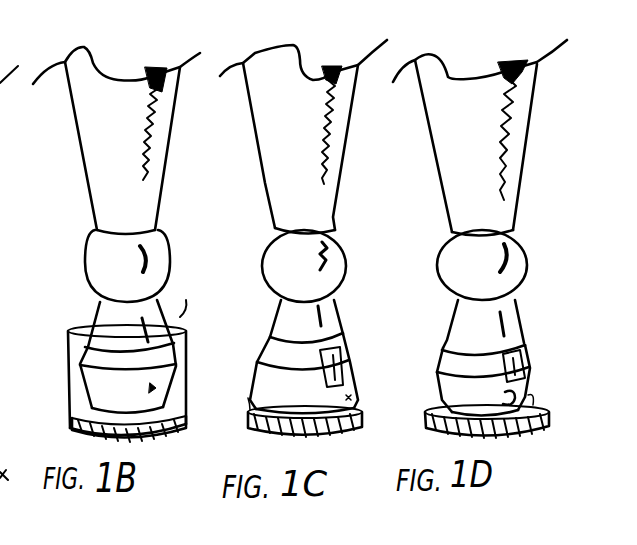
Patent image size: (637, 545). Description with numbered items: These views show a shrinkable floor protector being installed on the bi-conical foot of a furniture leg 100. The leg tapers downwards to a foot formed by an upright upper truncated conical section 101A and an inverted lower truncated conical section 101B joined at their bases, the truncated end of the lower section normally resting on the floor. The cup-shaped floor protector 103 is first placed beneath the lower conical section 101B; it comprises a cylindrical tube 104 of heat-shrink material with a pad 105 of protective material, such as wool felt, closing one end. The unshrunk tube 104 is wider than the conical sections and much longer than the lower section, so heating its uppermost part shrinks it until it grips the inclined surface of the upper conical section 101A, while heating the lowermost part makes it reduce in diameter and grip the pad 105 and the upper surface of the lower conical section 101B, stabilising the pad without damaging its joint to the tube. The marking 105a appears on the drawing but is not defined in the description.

In FIG. 1B, the furniture leg 100 is at (108, 137).
In FIG. 1D, the furniture leg 100 is at (455, 152).
In FIG. 1C, the horse leg 105a is at (297, 140).
In FIG. 1B, the upper truncated conical section 101A is at (115, 320).
In FIG. 1C, the upper truncated conical section 101A is at (290, 316).
In FIG. 1D, the upper truncated conical section 101A is at (456, 322).
In FIG. 1B, the lower truncated conical section 101B is at (103, 387).
In FIG. 1C, the lower truncated conical section 101B is at (283, 390).
In FIG. 1D, the lower truncated conical section 101B is at (470, 385).
In FIG. 1B, the floor protector 103 is at (191, 297).
In FIG. 1B, the cylindrical tube 104 is at (80, 353).
In FIG. 1C, the cylindrical tube 104 is at (243, 403).
In FIG. 1D, the cylindrical tube 104 is at (533, 405).
In FIG. 1B, the pad 105 is at (74, 426).
In FIG. 1C, the pad 105 is at (325, 430).
In FIG. 1D, the pad 105 is at (540, 422).